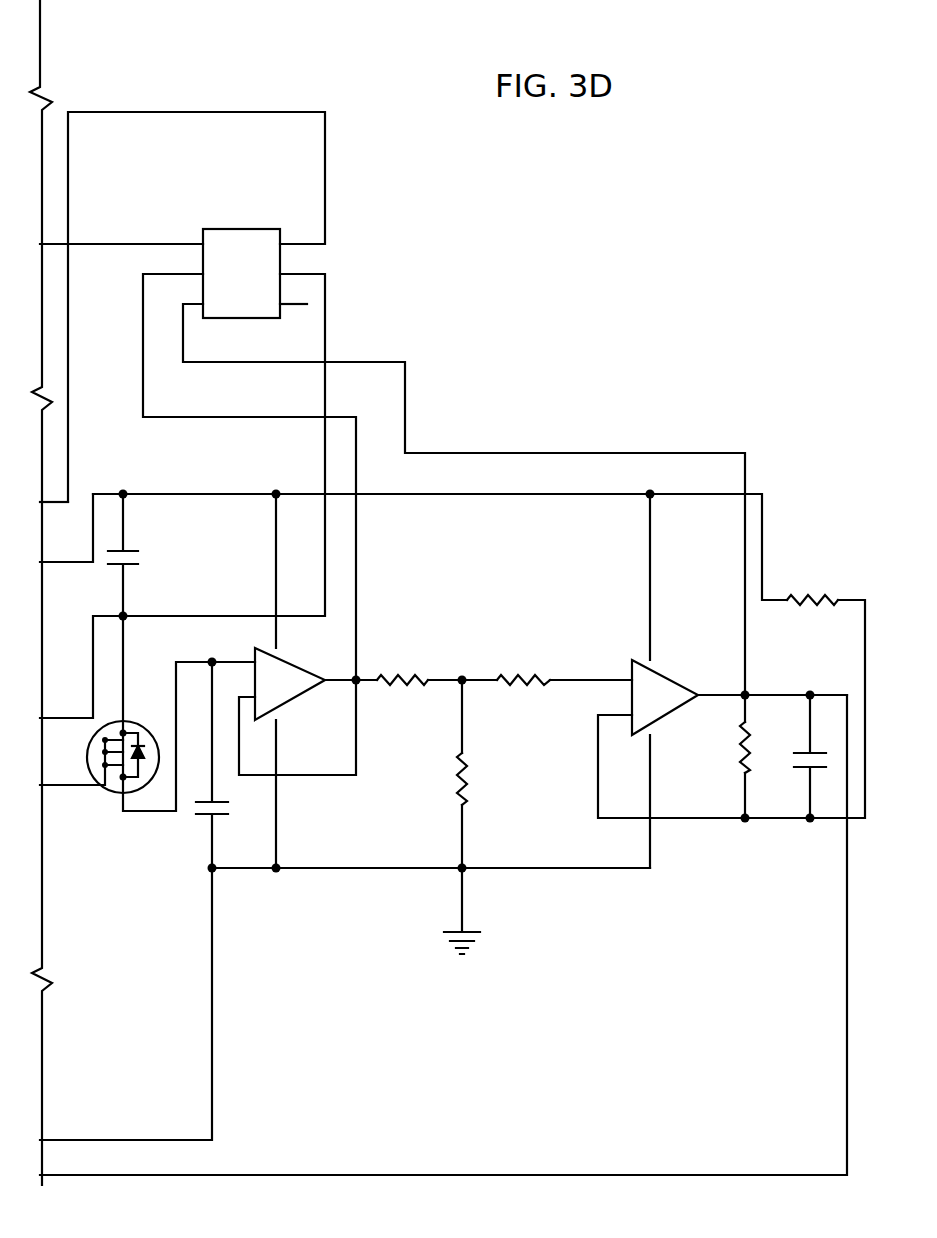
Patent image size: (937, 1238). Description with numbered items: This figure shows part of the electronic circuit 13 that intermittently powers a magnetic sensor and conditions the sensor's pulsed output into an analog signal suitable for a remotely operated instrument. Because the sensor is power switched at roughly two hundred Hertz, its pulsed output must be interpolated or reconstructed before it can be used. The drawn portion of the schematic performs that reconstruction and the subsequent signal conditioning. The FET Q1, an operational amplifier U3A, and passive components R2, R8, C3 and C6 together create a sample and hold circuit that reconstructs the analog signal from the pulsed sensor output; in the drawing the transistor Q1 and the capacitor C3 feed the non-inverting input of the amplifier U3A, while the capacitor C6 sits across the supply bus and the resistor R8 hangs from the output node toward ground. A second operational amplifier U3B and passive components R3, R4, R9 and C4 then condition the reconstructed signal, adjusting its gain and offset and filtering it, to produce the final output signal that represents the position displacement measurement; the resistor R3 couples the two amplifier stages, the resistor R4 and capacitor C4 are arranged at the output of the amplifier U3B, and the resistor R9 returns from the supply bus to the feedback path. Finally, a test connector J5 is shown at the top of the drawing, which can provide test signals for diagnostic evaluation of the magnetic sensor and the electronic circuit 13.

The electronic circuit 13 is at (548, 292).
The test connector J5 is at (242, 262).
The FET Q1 is at (99, 755).
The operational amplifier U3A is at (284, 681).
The operational amplifier U3B is at (665, 681).
The passive component C3 is at (223, 765).
The passive component C4 is at (794, 756).
The passive component C6 is at (142, 555).
The passive component R2 is at (402, 666).
The passive component R3 is at (523, 666).
The passive component R4 is at (731, 756).
The passive component R8 is at (481, 774).
The passive component R9 is at (812, 585).